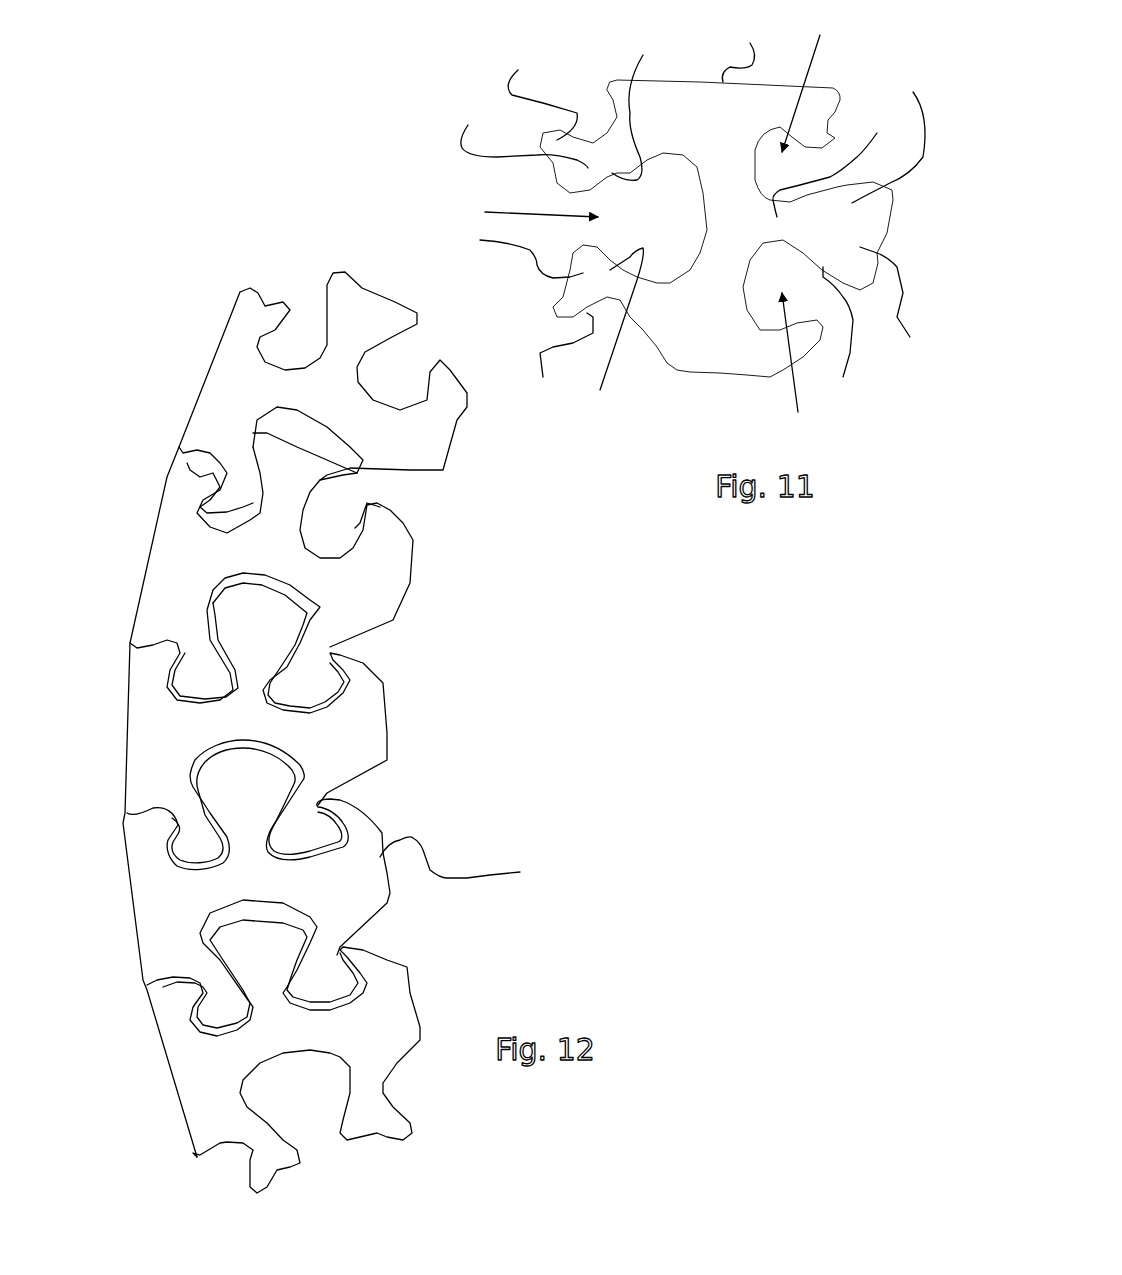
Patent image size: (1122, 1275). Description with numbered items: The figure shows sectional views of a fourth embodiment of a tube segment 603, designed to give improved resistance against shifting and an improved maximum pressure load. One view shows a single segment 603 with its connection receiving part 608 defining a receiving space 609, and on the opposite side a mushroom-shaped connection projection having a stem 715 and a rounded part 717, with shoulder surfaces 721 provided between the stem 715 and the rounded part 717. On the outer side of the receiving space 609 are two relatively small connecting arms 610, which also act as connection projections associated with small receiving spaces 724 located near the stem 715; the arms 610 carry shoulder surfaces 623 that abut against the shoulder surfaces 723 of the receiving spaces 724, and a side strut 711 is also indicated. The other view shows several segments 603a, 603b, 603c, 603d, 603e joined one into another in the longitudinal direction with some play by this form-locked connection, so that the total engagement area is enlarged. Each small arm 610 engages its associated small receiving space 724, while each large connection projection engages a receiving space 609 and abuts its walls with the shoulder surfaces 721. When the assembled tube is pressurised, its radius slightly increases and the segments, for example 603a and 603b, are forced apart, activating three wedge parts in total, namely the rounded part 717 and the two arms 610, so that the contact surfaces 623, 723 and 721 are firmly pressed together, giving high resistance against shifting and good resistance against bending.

In FIG. 12, the segment 603 is at (405, 87).
In FIG. 12, the segment 603a is at (286, 397).
In FIG. 12, the segment 603b is at (232, 562).
In FIG. 12, the segment 603c is at (212, 728).
In FIG. 12, the segment 603d is at (217, 888).
In FIG. 12, the segment 603e is at (249, 1043).
In FIG. 11, the connection receiving part 608 is at (723, 377).
In FIG. 12, the connection receiving part 608 is at (535, 720).
In FIG. 11, the receiving space 609 is at (517, 203).
In FIG. 11, the connecting arm 610 is at (509, 185).
In FIG. 11, the shoulder surface 623 is at (546, 226).
In FIG. 12, the shoulder surface 623 is at (200, 493).
In FIG. 11, the side strut 711 is at (749, 49).
In FIG. 12, the side strut 711 is at (130, 880).
In FIG. 11, the stem 715 is at (834, 162).
In FIG. 11, the rounded part 717 is at (902, 309).
In FIG. 11, the shoulder surface 721 is at (878, 237).
In FIG. 11, the shoulder surface 723 is at (629, 231).
In FIG. 12, the shoulder surface 723 is at (257, 467).
In FIG. 11, the receiving space 724 is at (815, 225).
In FIG. 12, the receiving space 724 is at (300, 333).